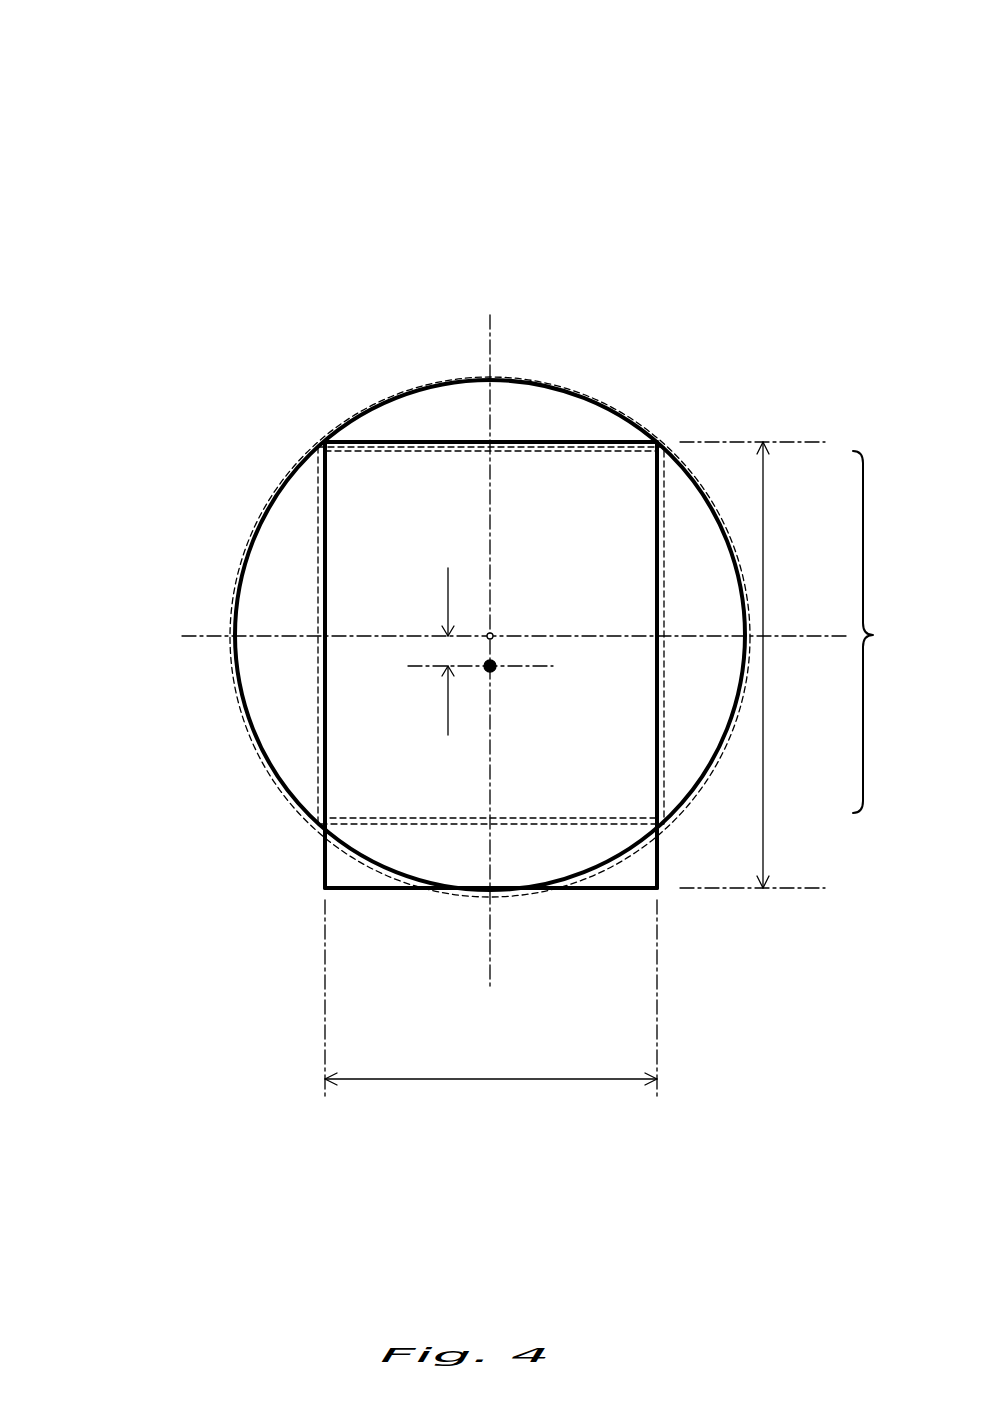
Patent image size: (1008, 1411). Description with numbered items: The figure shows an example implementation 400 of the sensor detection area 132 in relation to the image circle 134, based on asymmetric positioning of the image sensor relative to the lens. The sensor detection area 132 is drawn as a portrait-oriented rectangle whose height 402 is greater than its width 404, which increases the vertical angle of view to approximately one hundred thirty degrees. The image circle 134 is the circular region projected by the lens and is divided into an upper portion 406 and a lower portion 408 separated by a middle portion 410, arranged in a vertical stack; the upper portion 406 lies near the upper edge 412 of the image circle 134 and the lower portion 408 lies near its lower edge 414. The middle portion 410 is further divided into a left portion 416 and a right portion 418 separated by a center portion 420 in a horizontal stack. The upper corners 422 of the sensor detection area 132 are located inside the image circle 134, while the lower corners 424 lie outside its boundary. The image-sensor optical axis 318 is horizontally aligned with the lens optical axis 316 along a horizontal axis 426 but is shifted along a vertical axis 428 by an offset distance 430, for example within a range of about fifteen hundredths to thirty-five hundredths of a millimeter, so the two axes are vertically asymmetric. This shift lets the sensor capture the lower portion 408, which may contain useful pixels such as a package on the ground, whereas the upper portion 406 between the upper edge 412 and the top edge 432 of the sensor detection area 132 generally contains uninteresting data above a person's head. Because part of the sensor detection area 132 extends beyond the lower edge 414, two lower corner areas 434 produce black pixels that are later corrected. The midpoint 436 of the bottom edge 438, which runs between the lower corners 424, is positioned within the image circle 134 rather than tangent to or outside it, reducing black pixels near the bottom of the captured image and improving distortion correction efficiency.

The example implementation 400 is at (101, 43).
The sensor detection area 132 is at (318, 598).
The image circle 134 is at (240, 690).
The lens optical axis 316 is at (493, 633).
The image-sensor optical axis 318 is at (494, 671).
The height 402 is at (764, 509).
The width 404 is at (513, 1080).
The upper portion 406 is at (585, 392).
The lower portion 408 is at (410, 822).
The middle portion 410 is at (888, 632).
The upper edge 412 is at (575, 394).
The lower edge 414 is at (574, 879).
The left portion 416 is at (287, 532).
The right portion 418 is at (688, 557).
The center portion 420 is at (320, 750).
The upper corners 422 is at (325, 442).
The lower corners 424 is at (325, 888).
The horizontal axis 426 is at (575, 638).
The vertical axis 428 is at (492, 318).
The offset distance 430 is at (448, 592).
The top edge 432 is at (420, 440).
The lower corner areas 434 is at (628, 875).
The midpoint 436 is at (488, 886).
The bottom edge 438 is at (628, 889).